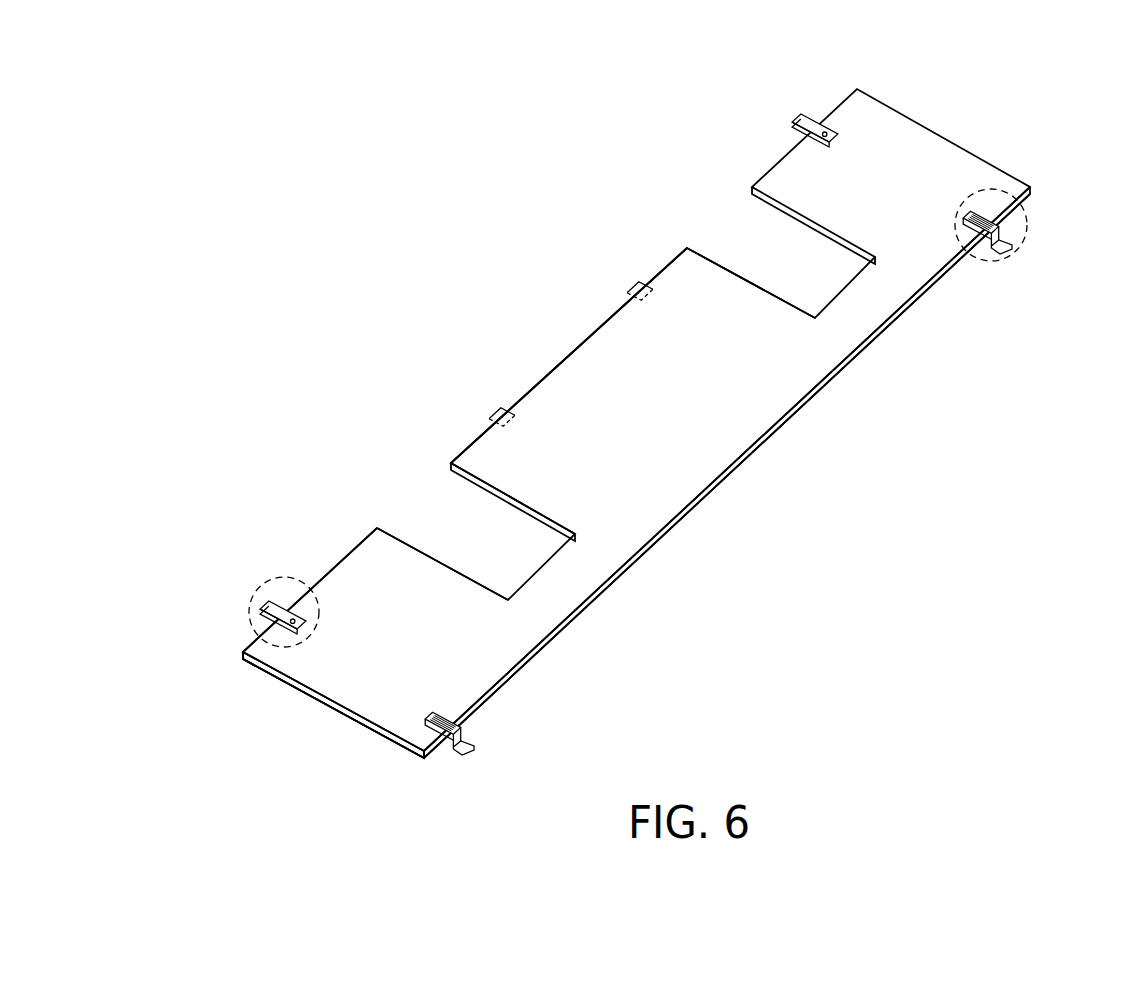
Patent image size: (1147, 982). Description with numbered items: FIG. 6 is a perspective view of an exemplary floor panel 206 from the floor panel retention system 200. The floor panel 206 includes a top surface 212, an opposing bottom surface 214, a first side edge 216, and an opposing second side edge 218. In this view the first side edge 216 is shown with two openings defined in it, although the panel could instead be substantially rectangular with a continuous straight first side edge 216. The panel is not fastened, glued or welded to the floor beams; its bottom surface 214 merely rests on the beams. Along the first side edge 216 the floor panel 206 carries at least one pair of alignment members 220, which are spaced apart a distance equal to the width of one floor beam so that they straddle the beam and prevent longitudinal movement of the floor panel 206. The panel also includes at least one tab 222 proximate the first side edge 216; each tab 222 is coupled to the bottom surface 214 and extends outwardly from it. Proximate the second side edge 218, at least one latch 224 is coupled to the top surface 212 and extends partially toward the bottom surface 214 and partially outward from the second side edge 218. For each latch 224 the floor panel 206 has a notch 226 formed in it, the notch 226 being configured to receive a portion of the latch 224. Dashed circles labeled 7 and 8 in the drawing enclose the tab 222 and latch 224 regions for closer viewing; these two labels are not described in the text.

The floor panel retention system 200 is at (356, 229).
The floor panel 206 is at (690, 411).
The top surface 212 is at (381, 689).
The bottom surface 214 is at (335, 667).
The first side edge 216 is at (370, 534).
The second side edge 218 is at (708, 493).
The alignment members 220 is at (557, 331).
The tab 222 is at (284, 590).
The latch 224 is at (470, 729).
The notch 226 is at (449, 756).
The detail circle for FIG. 7 is at (249, 580).
The detail circle for FIG. 8 is at (1024, 257).